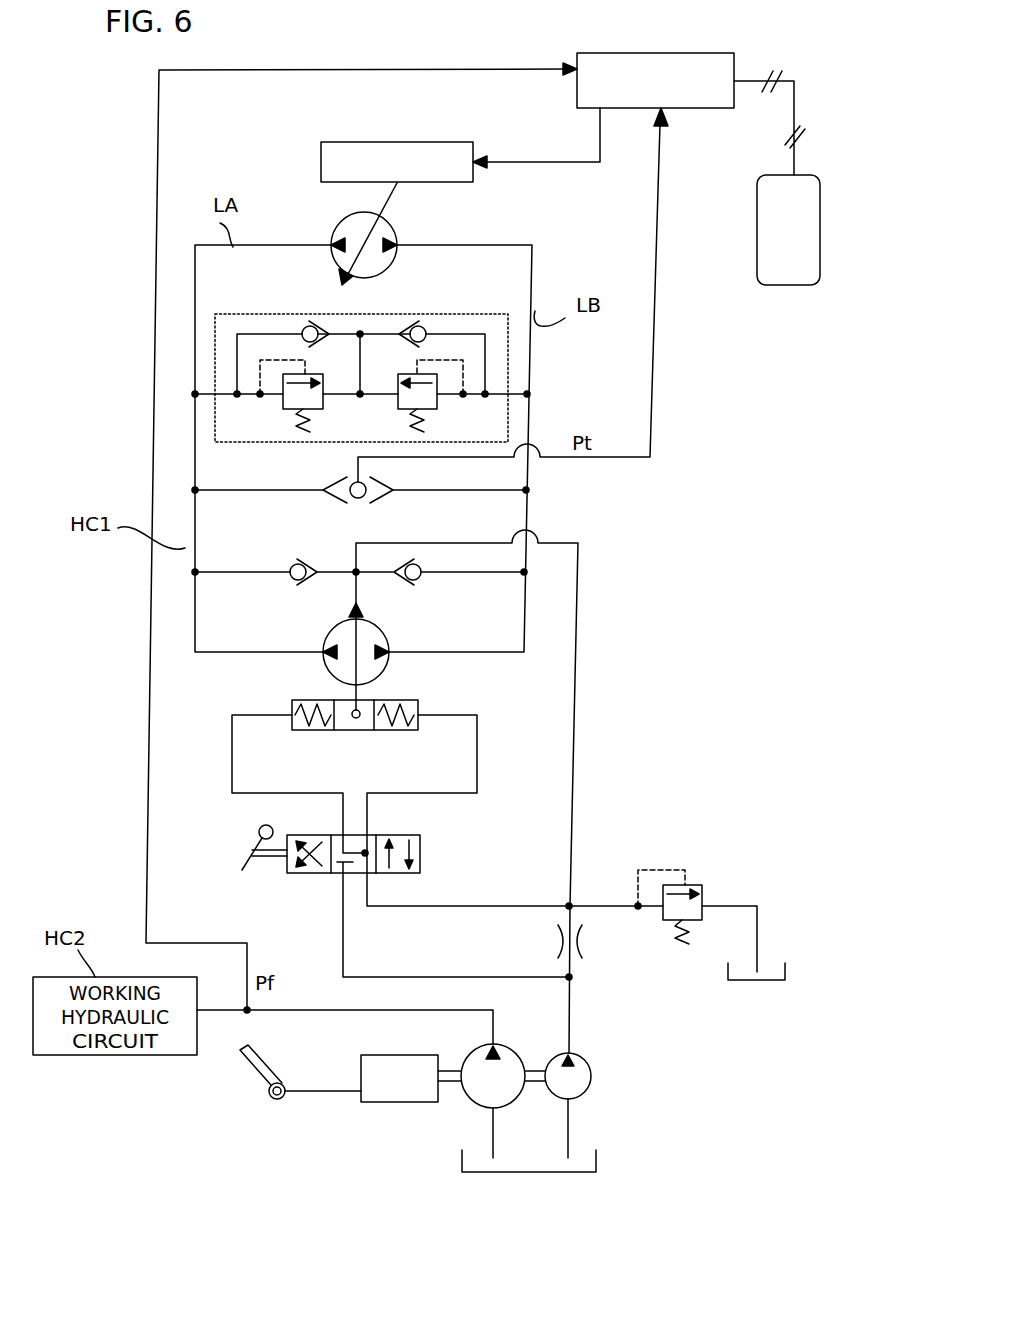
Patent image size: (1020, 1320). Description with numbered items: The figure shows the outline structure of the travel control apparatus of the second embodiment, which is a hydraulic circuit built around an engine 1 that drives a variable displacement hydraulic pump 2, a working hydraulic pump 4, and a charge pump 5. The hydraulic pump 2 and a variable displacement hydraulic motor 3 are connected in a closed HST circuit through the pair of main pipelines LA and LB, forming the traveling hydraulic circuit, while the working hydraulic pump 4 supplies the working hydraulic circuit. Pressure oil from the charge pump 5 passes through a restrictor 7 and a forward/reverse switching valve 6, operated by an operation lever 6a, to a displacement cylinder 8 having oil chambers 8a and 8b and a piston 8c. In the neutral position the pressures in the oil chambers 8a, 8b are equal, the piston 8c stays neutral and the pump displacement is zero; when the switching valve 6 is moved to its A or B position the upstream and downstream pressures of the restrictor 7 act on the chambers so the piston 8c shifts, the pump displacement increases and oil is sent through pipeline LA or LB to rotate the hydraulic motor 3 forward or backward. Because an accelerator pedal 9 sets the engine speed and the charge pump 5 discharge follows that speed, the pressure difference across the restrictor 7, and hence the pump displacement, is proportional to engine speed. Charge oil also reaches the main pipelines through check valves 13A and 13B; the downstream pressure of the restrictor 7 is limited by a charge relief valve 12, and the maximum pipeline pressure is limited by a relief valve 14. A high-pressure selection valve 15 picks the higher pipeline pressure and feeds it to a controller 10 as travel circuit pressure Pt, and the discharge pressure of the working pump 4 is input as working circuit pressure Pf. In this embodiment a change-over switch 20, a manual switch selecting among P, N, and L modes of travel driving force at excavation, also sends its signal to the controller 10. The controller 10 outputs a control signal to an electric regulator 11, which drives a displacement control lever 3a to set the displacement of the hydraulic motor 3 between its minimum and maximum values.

The engine 1 is at (390, 1103).
The variable displacement hydraulic pump 2 is at (327, 641).
The variable displacement hydraulic motor 3 is at (342, 219).
The displacement control lever 3a is at (396, 203).
The working hydraulic pump 4 is at (510, 1104).
The charge pump 5 is at (588, 1092).
The forward/reverse switching valve 6 is at (425, 849).
The operation lever 6a is at (258, 838).
The restrictor 7 is at (557, 940).
The displacement cylinder 8 is at (400, 787).
The oil chamber 8a is at (307, 731).
The oil chamber 8b is at (397, 731).
The piston 8c is at (355, 731).
The accelerator pedal 9 is at (251, 1074).
The controller 10 is at (634, 53).
The electric regulator 11 is at (395, 142).
The charge relief valve 12 is at (702, 885).
The check valve 13A is at (293, 583).
The check valve 13B is at (425, 583).
The relief valve 14 is at (474, 313).
The high-pressure selection valve 15 is at (328, 501).
The change-over switch 20 is at (824, 201).